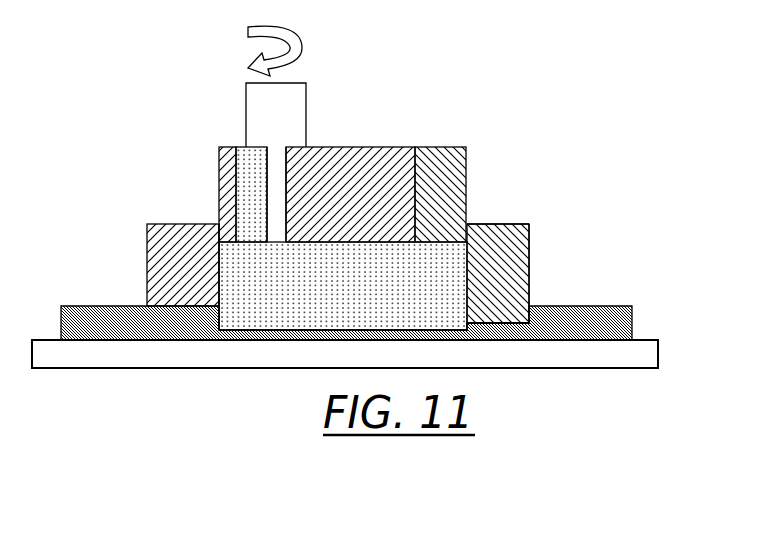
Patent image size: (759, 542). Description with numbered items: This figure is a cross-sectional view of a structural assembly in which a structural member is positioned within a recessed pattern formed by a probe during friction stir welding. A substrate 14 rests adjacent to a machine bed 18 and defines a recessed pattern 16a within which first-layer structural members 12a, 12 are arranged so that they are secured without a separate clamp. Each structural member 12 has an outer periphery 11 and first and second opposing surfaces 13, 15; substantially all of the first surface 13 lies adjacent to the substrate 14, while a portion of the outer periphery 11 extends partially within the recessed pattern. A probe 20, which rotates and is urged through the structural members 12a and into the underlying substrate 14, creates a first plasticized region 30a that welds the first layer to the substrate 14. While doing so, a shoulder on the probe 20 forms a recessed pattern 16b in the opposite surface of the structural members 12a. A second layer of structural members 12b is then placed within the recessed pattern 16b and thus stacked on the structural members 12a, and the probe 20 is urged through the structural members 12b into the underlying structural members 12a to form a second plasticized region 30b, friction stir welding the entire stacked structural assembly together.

The outer periphery 11 is at (529, 268).
The structural member 12 is at (152, 228).
The structural member 12a is at (501, 243).
The structural member 12b is at (441, 160).
The first surface 13 is at (507, 328).
The substrate 14 is at (631, 305).
The second surface 15 is at (494, 224).
The recessed pattern 16a is at (220, 330).
The recessed pattern 16b is at (220, 228).
The machine bed 18 is at (641, 345).
The probe 20 is at (306, 118).
The first plasticized region 30a is at (250, 293).
The second plasticized region 30b is at (252, 182).